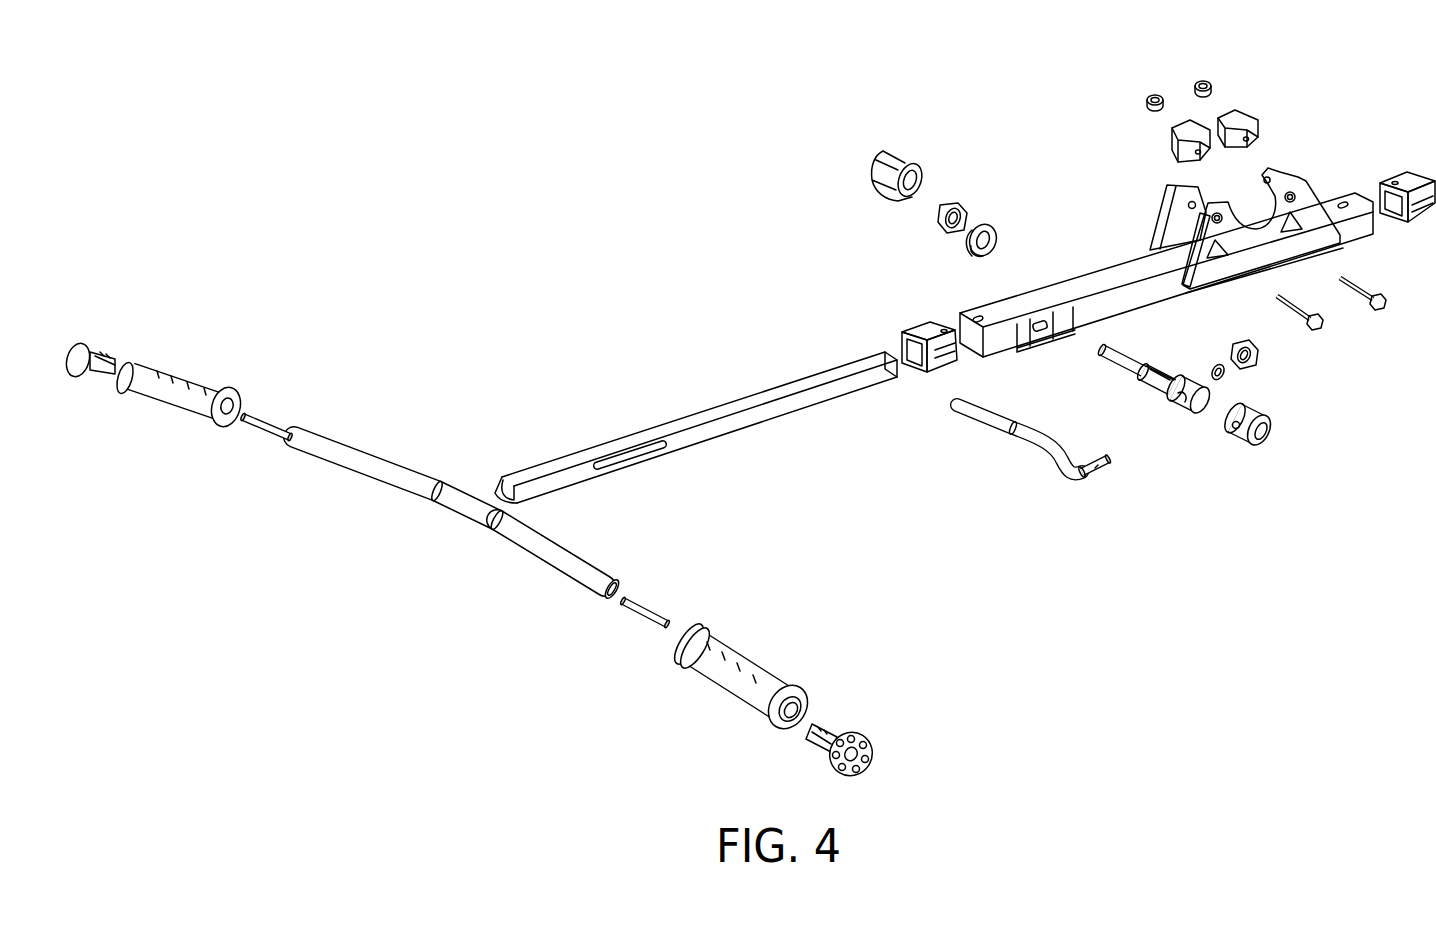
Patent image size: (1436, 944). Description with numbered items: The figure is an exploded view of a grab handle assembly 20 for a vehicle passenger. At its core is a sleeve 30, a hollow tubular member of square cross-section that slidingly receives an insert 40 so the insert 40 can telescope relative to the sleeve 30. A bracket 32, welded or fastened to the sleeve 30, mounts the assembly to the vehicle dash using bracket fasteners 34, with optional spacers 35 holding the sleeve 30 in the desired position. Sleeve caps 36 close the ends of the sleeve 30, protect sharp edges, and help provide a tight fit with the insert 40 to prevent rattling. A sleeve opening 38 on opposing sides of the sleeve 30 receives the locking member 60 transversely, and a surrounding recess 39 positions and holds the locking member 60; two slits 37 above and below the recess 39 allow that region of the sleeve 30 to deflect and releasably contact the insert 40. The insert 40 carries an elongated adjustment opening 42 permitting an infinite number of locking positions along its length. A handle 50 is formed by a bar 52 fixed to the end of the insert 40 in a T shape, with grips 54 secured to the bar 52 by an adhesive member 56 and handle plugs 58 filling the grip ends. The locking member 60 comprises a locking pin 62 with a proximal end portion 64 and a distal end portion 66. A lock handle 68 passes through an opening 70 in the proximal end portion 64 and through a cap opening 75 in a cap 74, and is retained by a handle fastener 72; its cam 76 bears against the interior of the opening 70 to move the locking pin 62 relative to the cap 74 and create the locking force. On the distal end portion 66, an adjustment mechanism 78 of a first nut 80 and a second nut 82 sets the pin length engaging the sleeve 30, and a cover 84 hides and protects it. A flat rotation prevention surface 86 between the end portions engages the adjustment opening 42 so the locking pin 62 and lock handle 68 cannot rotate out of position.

The grab handle assembly 20 is at (388, 120).
The sleeve 30 is at (1085, 283).
The bracket 32 is at (1265, 168).
The bracket fasteners 34 is at (1198, 85).
The spacers 35 is at (1228, 115).
The sleeve caps 36 is at (905, 333).
The slits 37 is at (1013, 305).
The sleeve opening 38 is at (1038, 342).
The recess 39 is at (1065, 337).
The insert 40 is at (738, 431).
The adjustment opening 42 is at (632, 462).
The handle 50 is at (408, 497).
The bar 52 is at (503, 546).
The grips 54 is at (193, 383).
The adhesive member 56 is at (273, 417).
The handle plugs 58 is at (862, 732).
The locking member 60 is at (1182, 436).
The locking pin 62 is at (1148, 380).
The proximal end portion 64 is at (1212, 394).
The distal end portion 66 is at (1105, 362).
The lock handle 68 is at (1025, 440).
The opening 70 is at (1178, 402).
The handle fastener 72 is at (1262, 353).
The cap 74 is at (1266, 422).
The cap opening 75 is at (1235, 433).
The cam 76 is at (1088, 470).
The adjustment mechanism 78 is at (983, 225).
The first nut 80 is at (970, 250).
The second nut 82 is at (938, 225).
The cover 84 is at (905, 150).
The rotation prevention surface 86 is at (1165, 368).